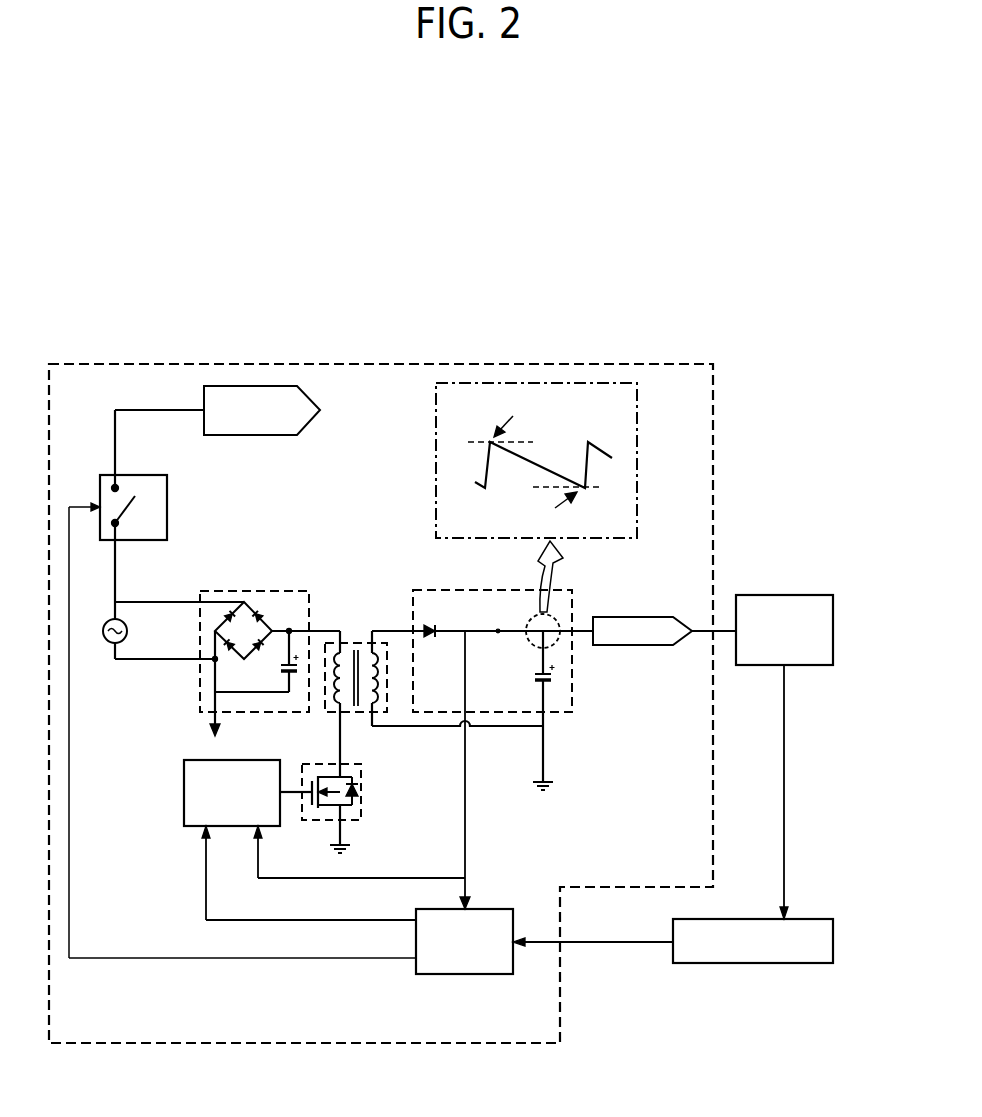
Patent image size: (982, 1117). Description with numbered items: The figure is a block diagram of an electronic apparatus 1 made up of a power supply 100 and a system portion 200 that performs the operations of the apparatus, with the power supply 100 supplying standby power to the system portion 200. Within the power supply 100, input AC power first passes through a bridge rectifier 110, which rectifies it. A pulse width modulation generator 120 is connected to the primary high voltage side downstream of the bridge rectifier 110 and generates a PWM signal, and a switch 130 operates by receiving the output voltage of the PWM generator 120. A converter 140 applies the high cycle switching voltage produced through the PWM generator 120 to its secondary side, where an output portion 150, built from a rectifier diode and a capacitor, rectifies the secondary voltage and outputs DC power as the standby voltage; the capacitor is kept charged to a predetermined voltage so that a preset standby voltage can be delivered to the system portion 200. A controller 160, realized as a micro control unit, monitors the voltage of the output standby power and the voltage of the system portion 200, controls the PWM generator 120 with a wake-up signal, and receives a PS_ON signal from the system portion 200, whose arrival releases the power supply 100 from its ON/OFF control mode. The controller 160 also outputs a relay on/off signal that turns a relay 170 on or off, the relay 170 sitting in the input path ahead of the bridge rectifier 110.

The electronic apparatus 1 is at (660, 293).
The power supply 100 is at (380, 364).
The bridge rectifier 110 is at (252, 590).
The pulse width modulation (PWM) generator 120 is at (184, 795).
The switch 130 is at (361, 810).
The converter 140 is at (349, 643).
The output portion 150 is at (572, 683).
The controller 160 is at (464, 974).
The relay 170 is at (167, 507).
The system portion 200 is at (784, 595).